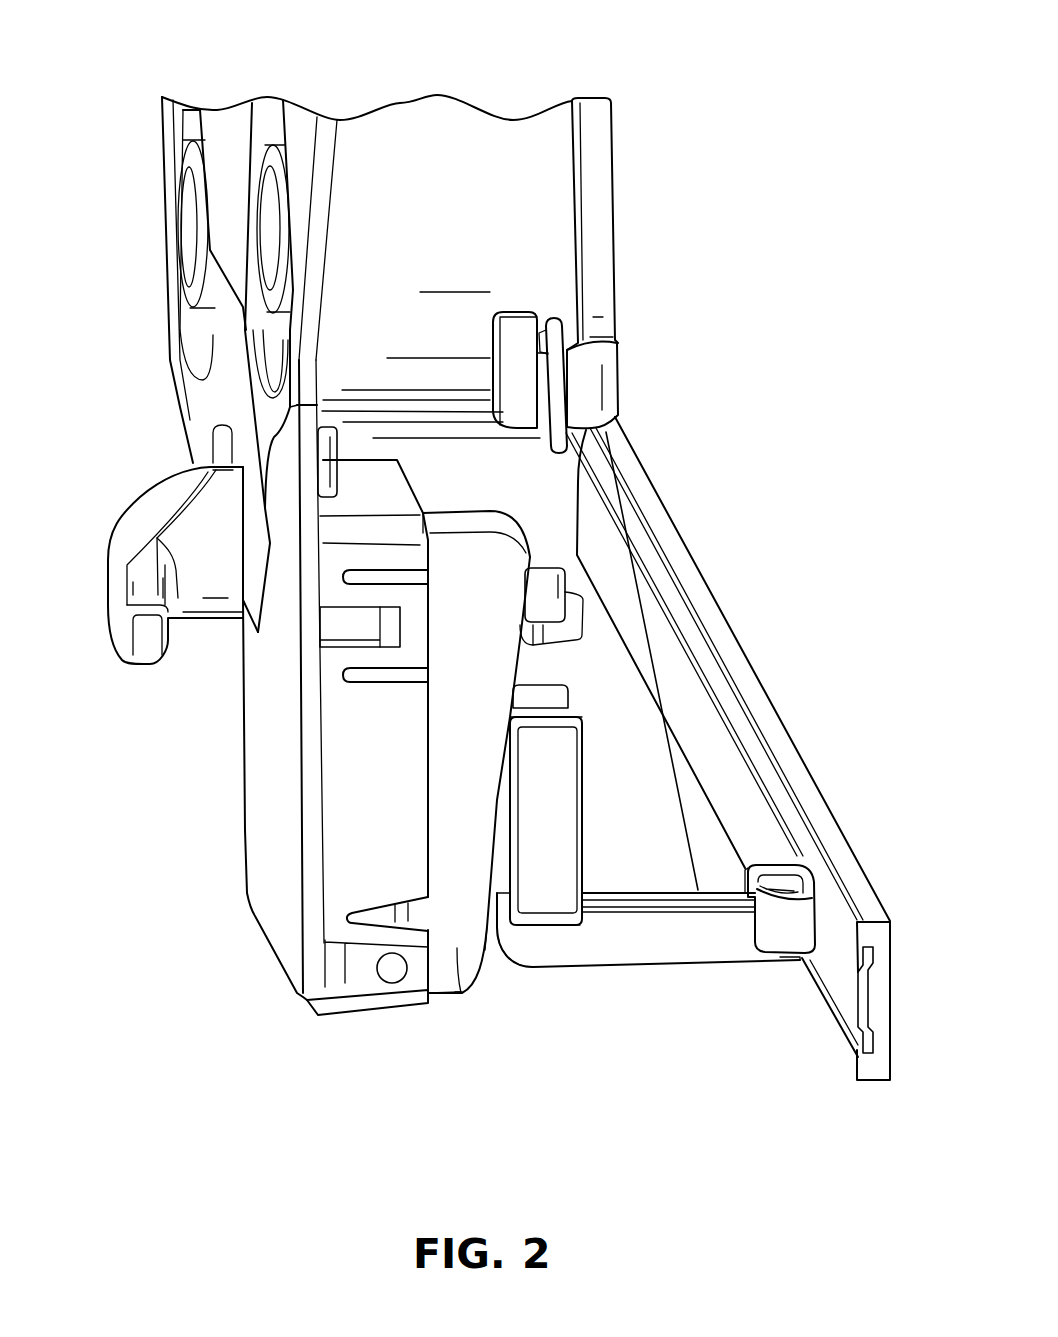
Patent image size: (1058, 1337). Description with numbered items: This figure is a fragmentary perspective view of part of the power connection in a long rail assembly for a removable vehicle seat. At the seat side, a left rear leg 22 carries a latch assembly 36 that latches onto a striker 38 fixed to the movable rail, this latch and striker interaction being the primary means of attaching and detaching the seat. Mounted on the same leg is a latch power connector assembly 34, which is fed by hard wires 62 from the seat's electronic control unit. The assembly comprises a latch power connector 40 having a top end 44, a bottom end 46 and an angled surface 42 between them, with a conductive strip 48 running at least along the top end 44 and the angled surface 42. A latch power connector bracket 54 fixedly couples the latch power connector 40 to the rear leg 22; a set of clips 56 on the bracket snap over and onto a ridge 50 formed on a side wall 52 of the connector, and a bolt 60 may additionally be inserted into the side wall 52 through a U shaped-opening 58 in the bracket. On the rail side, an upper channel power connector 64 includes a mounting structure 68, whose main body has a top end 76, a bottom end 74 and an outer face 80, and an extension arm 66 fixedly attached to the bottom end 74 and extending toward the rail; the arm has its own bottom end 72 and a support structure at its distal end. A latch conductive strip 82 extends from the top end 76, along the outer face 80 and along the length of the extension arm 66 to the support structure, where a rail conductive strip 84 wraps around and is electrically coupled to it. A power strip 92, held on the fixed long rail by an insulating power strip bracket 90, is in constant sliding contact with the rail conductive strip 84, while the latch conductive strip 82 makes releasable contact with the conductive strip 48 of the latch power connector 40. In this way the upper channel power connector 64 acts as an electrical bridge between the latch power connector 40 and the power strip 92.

The left rear leg 22 is at (541, 106).
The latch power connector assembly 34 is at (96, 759).
The latch assembly 36 is at (157, 185).
The striker 38 is at (142, 508).
The latch power connector 40 is at (458, 1000).
The angled surface 42 is at (567, 633).
The top end 44 is at (490, 509).
The bottom end 46 is at (434, 1000).
The conductive strip 48 is at (466, 520).
The ridge 50 is at (383, 625).
The side wall 52 is at (457, 994).
The latch power connector bracket 54 is at (417, 800).
The clips 56 is at (387, 663).
The U shaped-opening 58 is at (352, 1007).
The bolt 60 is at (385, 973).
The hard wires 62 is at (325, 455).
The upper channel power connector 64 is at (553, 994).
The extension arm 66 is at (697, 940).
The mounting structure 68 is at (590, 817).
The bottom end 72 is at (788, 963).
The bottom end 74 is at (548, 923).
The top end 76 is at (540, 667).
The outer face 80 is at (483, 905).
The latch conductive strip 82 is at (560, 698).
The rail conductive strip 84 is at (773, 875).
The power strip bracket 90 is at (842, 1035).
The power strip 92 is at (870, 988).